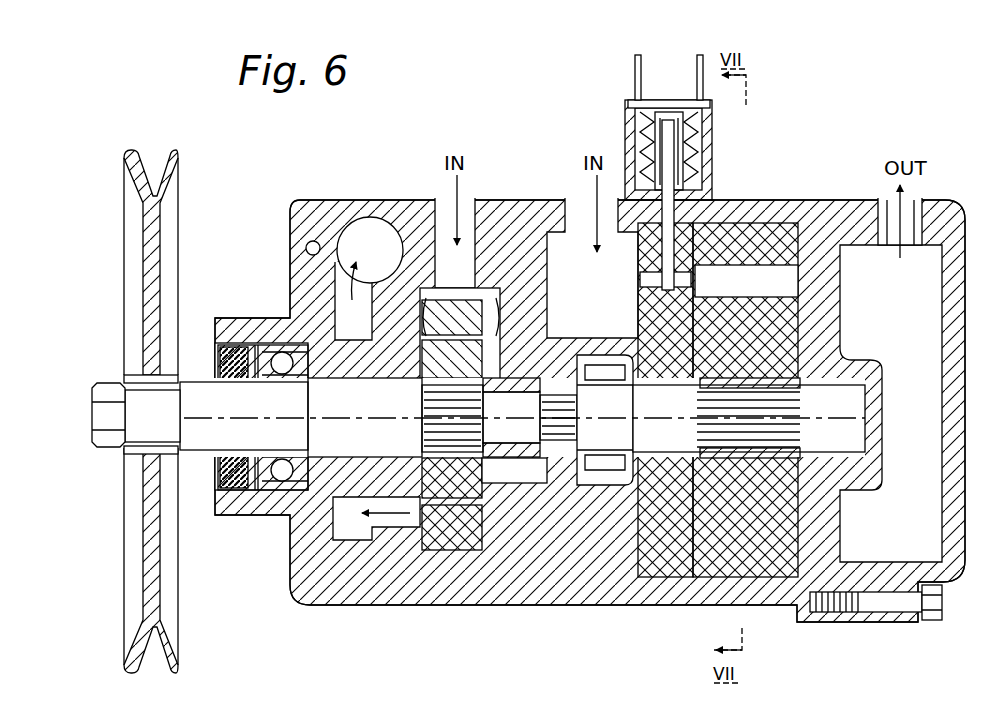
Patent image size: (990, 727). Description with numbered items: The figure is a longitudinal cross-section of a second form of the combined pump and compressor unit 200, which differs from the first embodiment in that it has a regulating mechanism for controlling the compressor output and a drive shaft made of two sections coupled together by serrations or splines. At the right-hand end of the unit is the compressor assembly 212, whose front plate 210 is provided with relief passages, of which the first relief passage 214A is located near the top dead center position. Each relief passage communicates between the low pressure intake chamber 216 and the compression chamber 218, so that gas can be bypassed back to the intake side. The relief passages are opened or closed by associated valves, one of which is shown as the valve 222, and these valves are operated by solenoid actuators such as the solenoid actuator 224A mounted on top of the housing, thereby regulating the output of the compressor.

The combined pump and compressor unit 200 is at (511, 158).
The front plate 210 is at (661, 578).
The compressor assembly 212 is at (858, 345).
The first relief passage 214A is at (752, 194).
The low pressure intake chamber 216 is at (617, 314).
The compression chamber 218 is at (770, 291).
The valve 222 is at (638, 280).
The solenoid actuator 224A is at (718, 142).